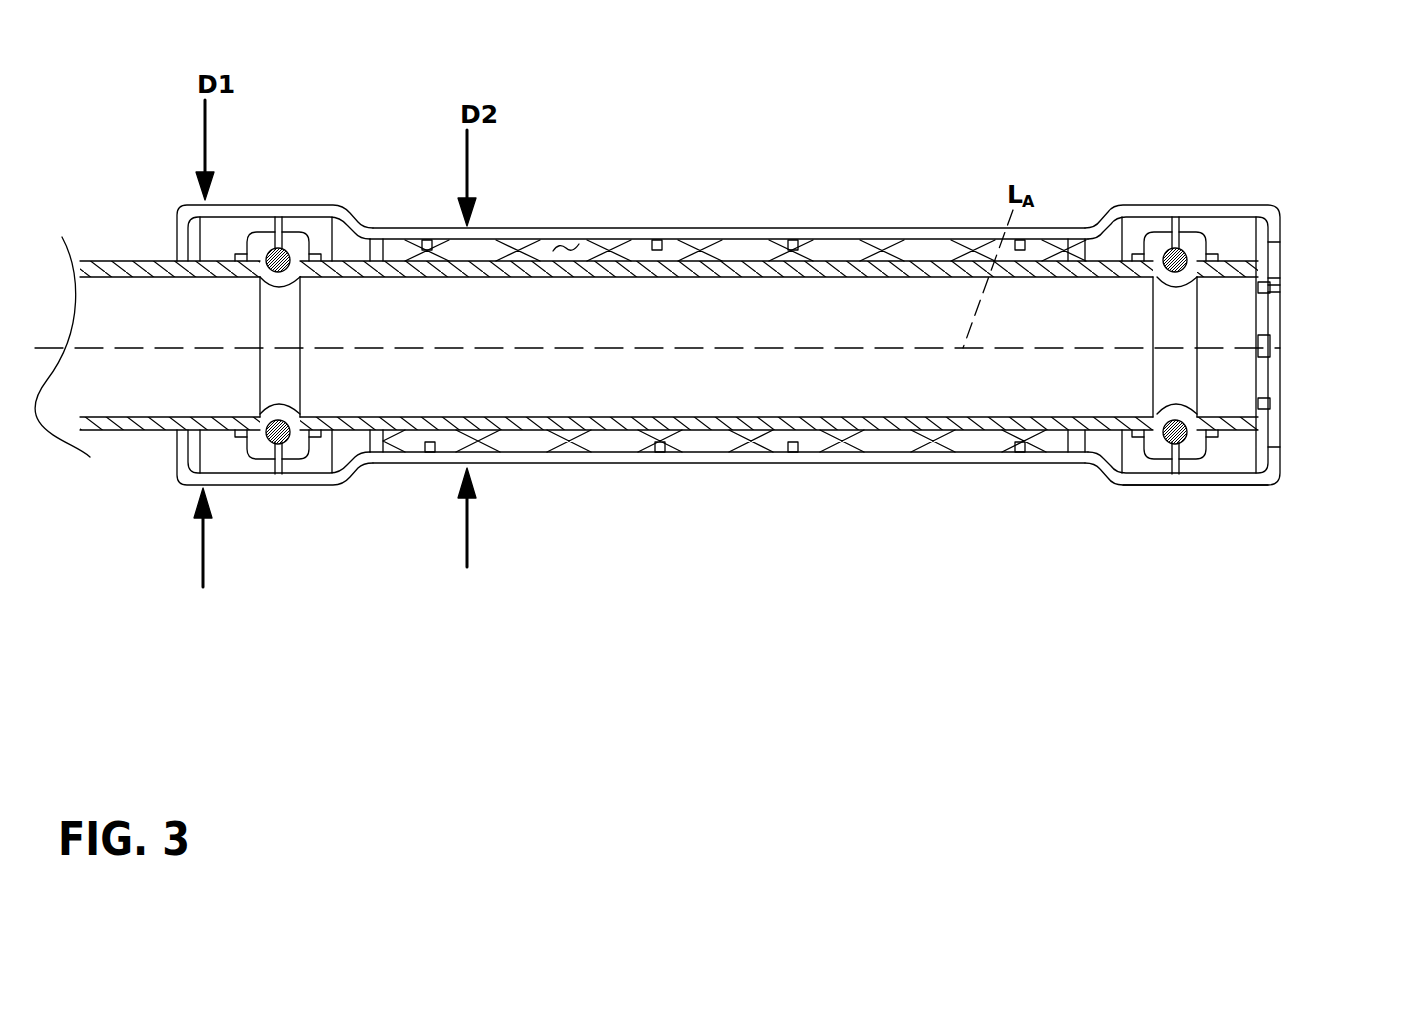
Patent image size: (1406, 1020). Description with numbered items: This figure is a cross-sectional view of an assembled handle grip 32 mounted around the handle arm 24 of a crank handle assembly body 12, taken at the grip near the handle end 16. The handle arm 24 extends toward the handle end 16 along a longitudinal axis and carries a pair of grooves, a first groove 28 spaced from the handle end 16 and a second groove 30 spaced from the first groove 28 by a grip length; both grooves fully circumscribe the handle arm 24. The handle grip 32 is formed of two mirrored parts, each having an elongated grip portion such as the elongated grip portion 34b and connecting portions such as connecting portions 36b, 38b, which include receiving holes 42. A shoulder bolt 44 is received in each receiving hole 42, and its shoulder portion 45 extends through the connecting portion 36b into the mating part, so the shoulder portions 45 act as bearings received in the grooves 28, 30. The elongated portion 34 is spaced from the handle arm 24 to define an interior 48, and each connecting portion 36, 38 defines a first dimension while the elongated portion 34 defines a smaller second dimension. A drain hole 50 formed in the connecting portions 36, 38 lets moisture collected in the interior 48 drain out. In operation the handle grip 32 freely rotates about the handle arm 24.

The body 12 is at (523, 432).
The handle end 16 is at (1247, 424).
The handle arm 24 is at (748, 426).
The first groove 28 is at (1182, 428).
The second groove 30 is at (290, 430).
The handle grip 32 is at (764, 331).
The elongated portion 34 is at (811, 227).
The elongated grip portion of second part 34b is at (888, 460).
The connecting portion 36 is at (1245, 336).
The connecting portion of second part 36b is at (1205, 487).
The connecting portion 38 is at (277, 343).
The connecting portion of second part 38b is at (233, 205).
The receiving hole 42 is at (280, 440).
The shoulder bolt 44 is at (1178, 250).
The shoulder portion 45 is at (283, 255).
The interior 48 is at (571, 249).
The drain hole 50 is at (1278, 433).